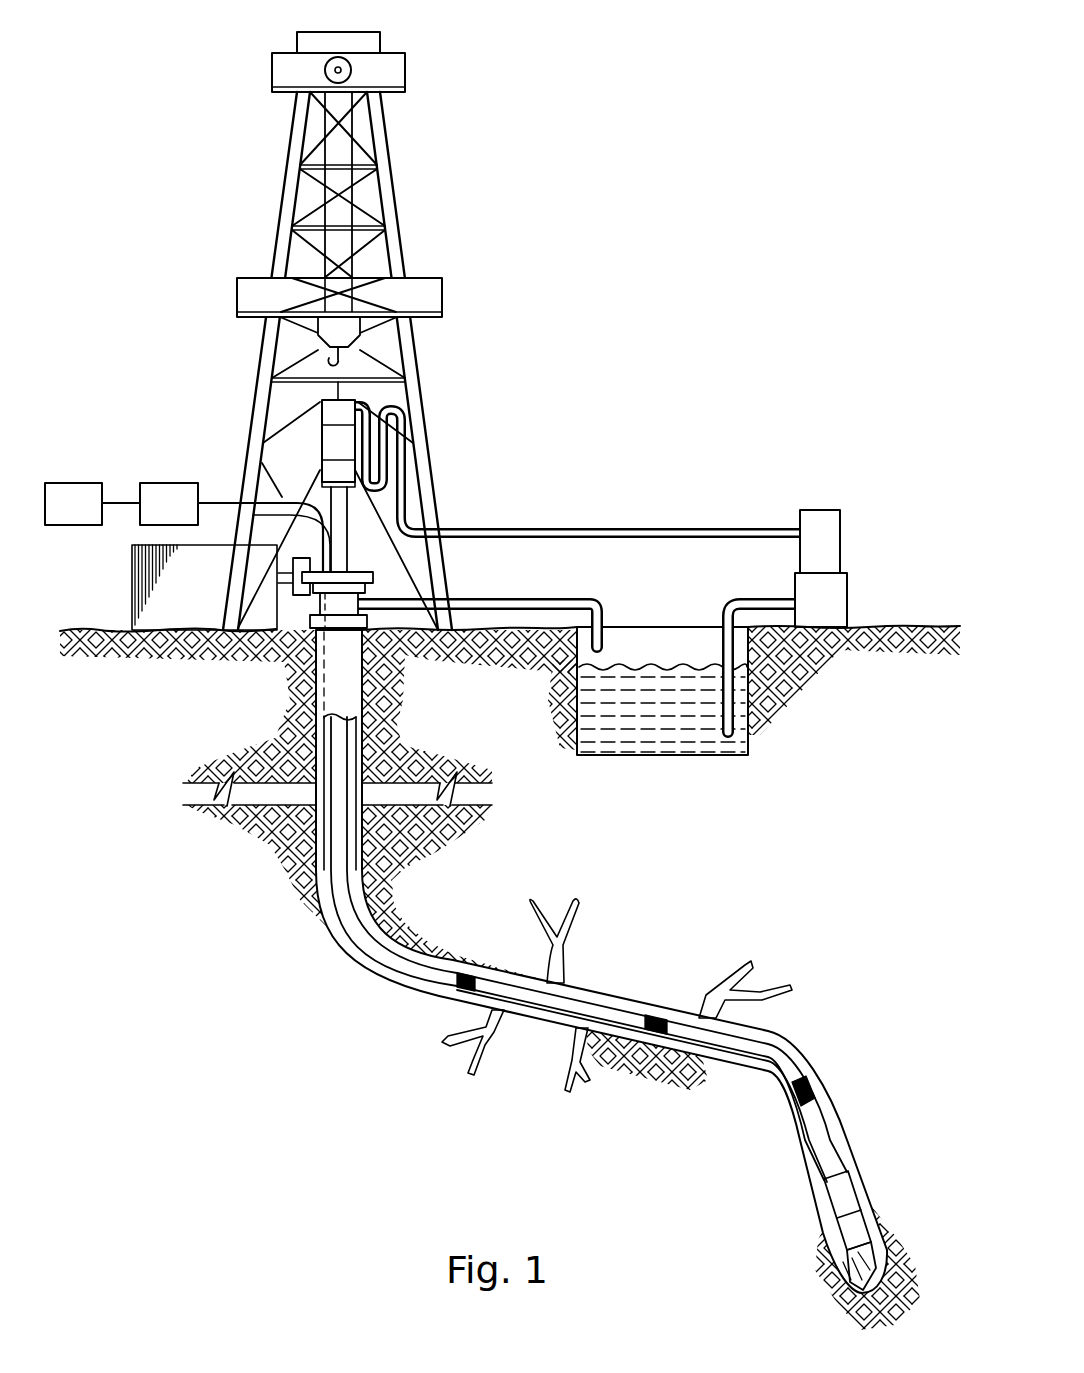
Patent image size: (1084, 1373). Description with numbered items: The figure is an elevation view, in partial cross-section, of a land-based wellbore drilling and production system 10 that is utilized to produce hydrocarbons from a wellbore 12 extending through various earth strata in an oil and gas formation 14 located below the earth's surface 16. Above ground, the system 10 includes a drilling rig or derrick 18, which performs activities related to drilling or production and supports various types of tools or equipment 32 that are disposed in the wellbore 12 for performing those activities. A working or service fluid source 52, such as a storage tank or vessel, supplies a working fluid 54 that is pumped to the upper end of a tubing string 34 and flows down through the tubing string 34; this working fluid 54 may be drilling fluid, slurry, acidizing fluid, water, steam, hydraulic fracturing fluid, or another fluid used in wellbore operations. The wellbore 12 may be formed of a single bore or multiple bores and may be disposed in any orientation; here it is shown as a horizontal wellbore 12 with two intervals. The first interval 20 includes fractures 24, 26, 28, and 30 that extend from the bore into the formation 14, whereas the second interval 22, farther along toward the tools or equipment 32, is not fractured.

The wellbore drilling and production system 10 is at (155, 74).
The wellbore 12 is at (378, 980).
The oil and gas formation 14 is at (486, 880).
The earth's surface 16 is at (897, 628).
The drilling rig or derrick 18 is at (280, 195).
The first interval 20 is at (632, 1027).
The second interval 22 is at (775, 1073).
The fracture 24 is at (562, 955).
The fracture 26 is at (757, 970).
The fracture 28 is at (470, 1076).
The fracture 30 is at (563, 1092).
The tools or equipment 32 is at (857, 1190).
The tubing string 34 is at (337, 750).
The working or service fluid source 52 is at (663, 757).
The working fluid 54 is at (653, 675).